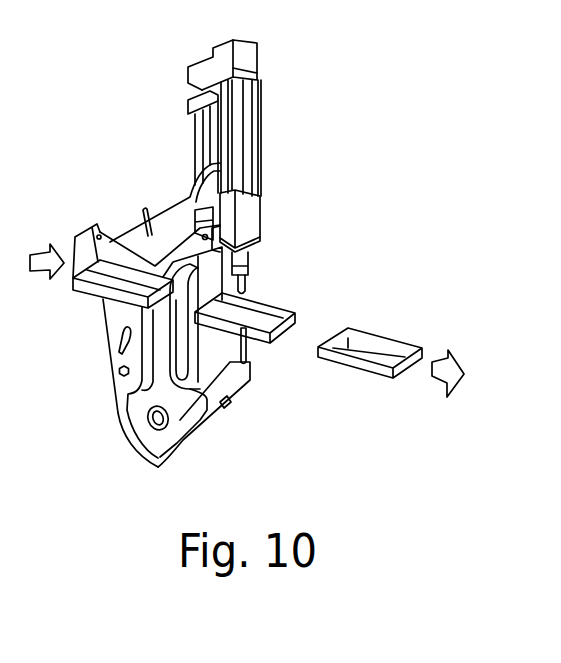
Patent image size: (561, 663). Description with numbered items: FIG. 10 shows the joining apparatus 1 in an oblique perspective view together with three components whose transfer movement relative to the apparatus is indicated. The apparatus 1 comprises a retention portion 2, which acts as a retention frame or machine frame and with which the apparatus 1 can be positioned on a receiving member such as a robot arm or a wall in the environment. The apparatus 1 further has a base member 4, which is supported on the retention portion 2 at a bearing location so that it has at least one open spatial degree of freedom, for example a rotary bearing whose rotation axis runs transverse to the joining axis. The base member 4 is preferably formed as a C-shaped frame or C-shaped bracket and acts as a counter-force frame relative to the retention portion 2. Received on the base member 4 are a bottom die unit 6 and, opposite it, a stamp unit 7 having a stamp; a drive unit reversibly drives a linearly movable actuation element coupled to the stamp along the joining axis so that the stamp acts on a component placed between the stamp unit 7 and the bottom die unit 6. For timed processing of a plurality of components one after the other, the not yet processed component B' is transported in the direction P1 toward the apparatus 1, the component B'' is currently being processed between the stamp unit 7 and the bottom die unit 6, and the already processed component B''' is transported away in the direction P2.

The apparatus 1 is at (263, 112).
The retention portion 2 is at (135, 227).
The base member 4 is at (224, 424).
The bottom die unit 6 is at (250, 349).
The stamp unit 7 is at (249, 290).
The component B' is at (112, 317).
The component B'' is at (285, 295).
The component B''' is at (389, 321).
The transport direction P1 is at (42, 252).
The transport direction P2 is at (454, 357).